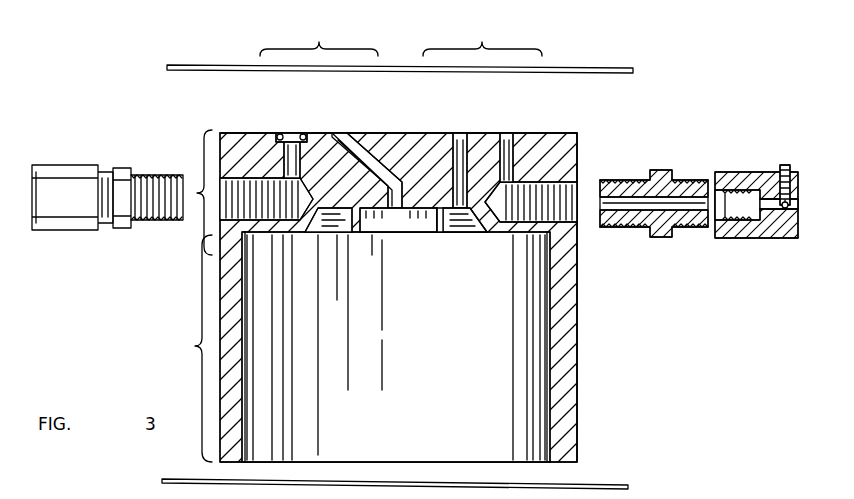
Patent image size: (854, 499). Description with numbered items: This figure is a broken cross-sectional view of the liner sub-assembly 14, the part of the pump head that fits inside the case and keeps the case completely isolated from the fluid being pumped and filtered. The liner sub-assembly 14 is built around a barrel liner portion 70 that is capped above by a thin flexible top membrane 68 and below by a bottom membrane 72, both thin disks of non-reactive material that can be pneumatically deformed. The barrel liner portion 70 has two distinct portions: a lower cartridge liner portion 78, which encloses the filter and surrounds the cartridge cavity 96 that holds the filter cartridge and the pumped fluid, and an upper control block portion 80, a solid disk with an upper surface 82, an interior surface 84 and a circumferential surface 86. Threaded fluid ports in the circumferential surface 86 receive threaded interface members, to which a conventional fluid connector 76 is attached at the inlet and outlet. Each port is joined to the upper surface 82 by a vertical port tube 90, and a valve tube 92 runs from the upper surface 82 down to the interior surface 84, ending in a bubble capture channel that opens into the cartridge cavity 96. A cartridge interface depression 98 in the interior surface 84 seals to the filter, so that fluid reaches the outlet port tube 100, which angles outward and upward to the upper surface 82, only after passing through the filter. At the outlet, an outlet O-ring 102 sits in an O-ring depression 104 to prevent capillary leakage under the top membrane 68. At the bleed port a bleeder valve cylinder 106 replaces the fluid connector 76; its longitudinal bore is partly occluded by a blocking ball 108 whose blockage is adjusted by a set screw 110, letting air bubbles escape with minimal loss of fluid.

The liner sub-assembly 14 is at (637, 331).
The top membrane 68 is at (620, 66).
The barrel liner portion 70 is at (587, 365).
The bottom membrane 72 is at (622, 482).
The fluid connector 76 is at (80, 167).
The cartridge liner portion 78 is at (195, 346).
The control block portion 80 is at (197, 165).
The upper surface 82 is at (572, 133).
The interior surface 84 is at (503, 232).
The circumferential surface 86 is at (578, 150).
The vertical port tube 90 is at (507, 133).
The valve tube 92 is at (460, 133).
The cartridge cavity 96 is at (426, 384).
The cartridge interface depression 98 is at (378, 232).
The outlet port tube 100 is at (340, 133).
The outlet O-ring 102 is at (292, 133).
The O-ring depression 104 is at (275, 133).
The bleeder valve cylinder 106 is at (752, 172).
The blocking ball 108 is at (778, 238).
The set screw 110 is at (785, 165).